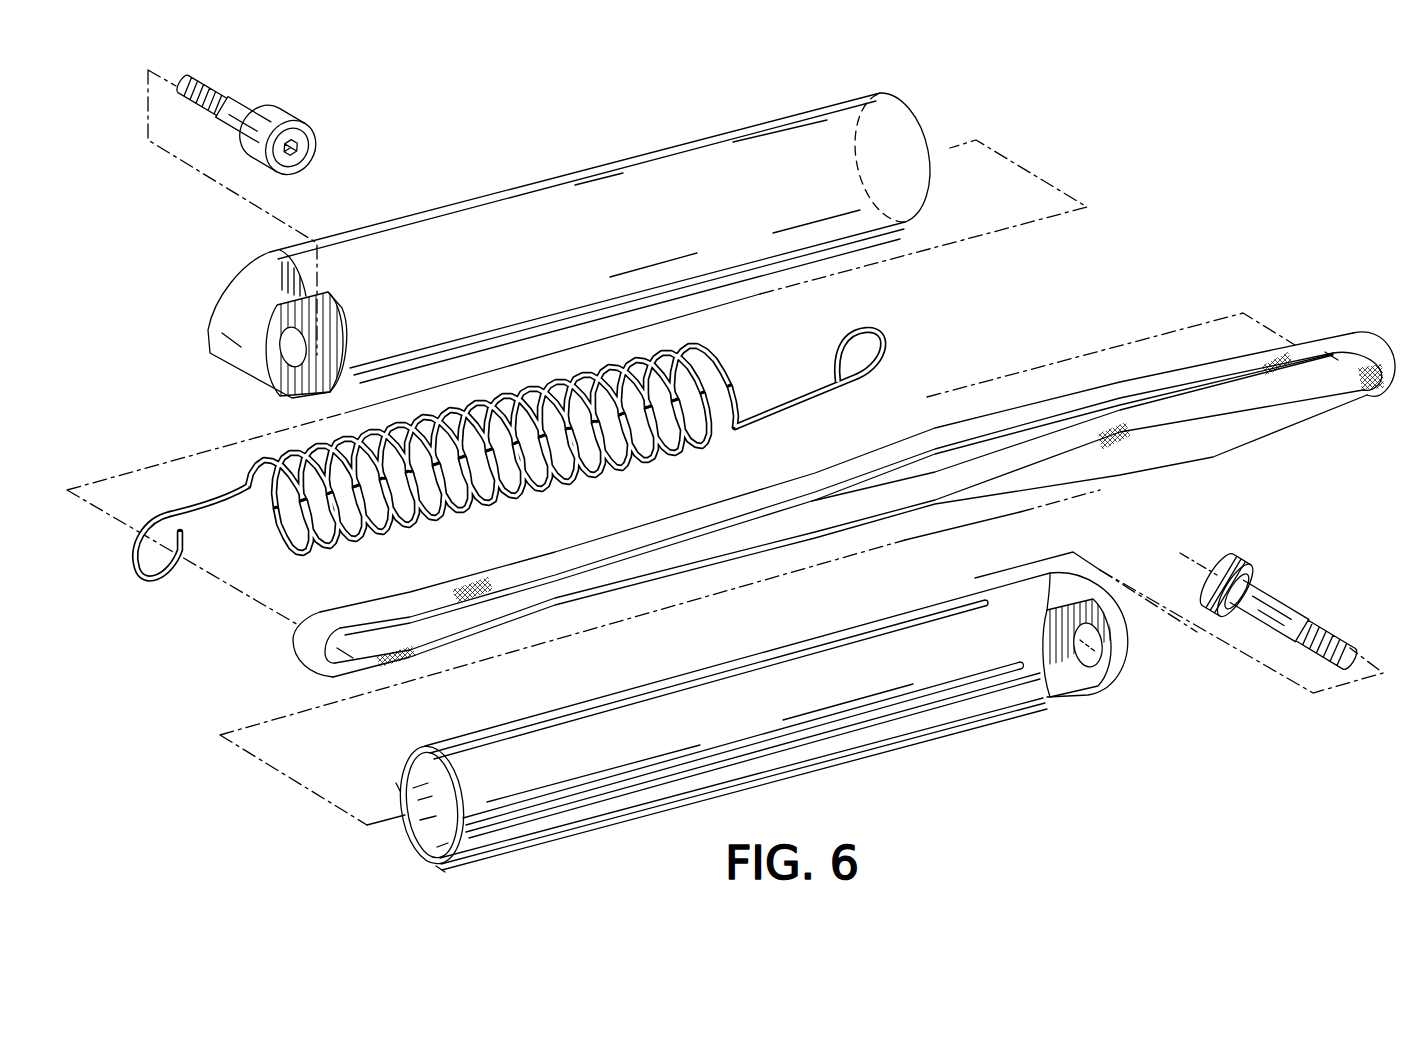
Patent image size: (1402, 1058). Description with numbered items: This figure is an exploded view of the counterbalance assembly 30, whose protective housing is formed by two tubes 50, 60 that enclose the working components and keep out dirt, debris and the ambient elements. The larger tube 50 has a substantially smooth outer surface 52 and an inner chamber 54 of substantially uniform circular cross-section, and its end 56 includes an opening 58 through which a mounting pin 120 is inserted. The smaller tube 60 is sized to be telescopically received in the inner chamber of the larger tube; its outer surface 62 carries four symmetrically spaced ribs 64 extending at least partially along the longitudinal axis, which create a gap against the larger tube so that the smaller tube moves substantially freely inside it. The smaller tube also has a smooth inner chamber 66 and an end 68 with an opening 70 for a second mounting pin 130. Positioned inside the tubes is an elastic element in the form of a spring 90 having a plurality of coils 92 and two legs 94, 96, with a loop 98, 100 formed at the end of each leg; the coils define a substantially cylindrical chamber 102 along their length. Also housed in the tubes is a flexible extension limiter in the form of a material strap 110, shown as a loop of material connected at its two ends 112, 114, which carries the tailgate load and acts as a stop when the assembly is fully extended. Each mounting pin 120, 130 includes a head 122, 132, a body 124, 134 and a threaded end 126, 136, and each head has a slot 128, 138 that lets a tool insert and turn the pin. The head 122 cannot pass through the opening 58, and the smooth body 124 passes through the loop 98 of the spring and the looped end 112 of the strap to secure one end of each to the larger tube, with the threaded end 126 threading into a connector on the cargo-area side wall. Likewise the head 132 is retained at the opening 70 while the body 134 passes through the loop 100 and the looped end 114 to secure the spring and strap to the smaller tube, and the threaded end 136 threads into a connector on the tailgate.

The counterbalance assembly 30 is at (731, 488).
The tube 50 is at (559, 238).
The outer surface 52 is at (632, 160).
The inner chamber 54 is at (883, 128).
The end 56 is at (240, 325).
The opening 58 is at (290, 350).
The tube 60 is at (761, 746).
The outer surface 62 is at (1015, 700).
The ribs 64 is at (610, 697).
The inner chamber 66 is at (433, 823).
The end 68 is at (1119, 660).
The opening 70 is at (1085, 663).
The spring 90 is at (536, 468).
The coils 92 is at (650, 458).
The leg 94 is at (197, 502).
The leg 96 is at (795, 403).
The loop 98 is at (140, 567).
The loop 100 is at (890, 342).
The cylindrical chamber 102 is at (300, 547).
The material strap 110 is at (796, 472).
The looped end 112 is at (300, 655).
The looped end 114 is at (1360, 343).
The mounting pin 120 is at (265, 140).
The head 122 is at (297, 128).
The body 124 is at (238, 135).
The threaded end 126 is at (203, 88).
The slot 128 is at (310, 158).
The mounting pin 130 is at (1261, 609).
The head 132 is at (1250, 563).
The body 134 is at (1293, 605).
The threaded end 136 is at (1320, 647).
The slot 138 is at (1174, 552).